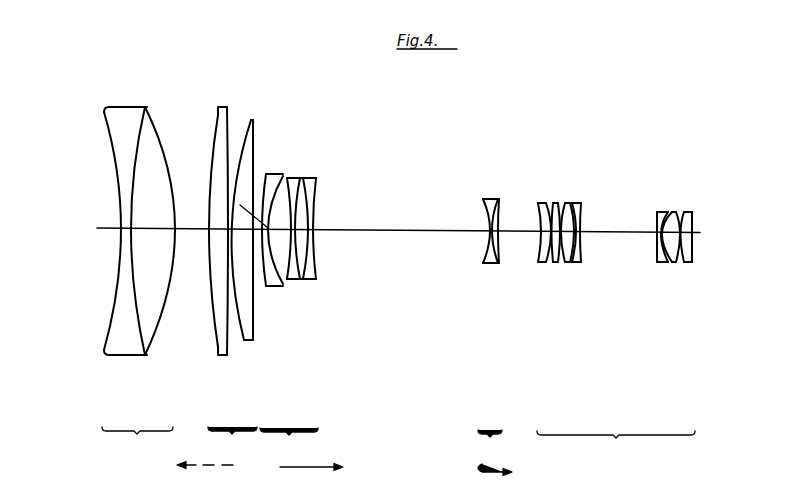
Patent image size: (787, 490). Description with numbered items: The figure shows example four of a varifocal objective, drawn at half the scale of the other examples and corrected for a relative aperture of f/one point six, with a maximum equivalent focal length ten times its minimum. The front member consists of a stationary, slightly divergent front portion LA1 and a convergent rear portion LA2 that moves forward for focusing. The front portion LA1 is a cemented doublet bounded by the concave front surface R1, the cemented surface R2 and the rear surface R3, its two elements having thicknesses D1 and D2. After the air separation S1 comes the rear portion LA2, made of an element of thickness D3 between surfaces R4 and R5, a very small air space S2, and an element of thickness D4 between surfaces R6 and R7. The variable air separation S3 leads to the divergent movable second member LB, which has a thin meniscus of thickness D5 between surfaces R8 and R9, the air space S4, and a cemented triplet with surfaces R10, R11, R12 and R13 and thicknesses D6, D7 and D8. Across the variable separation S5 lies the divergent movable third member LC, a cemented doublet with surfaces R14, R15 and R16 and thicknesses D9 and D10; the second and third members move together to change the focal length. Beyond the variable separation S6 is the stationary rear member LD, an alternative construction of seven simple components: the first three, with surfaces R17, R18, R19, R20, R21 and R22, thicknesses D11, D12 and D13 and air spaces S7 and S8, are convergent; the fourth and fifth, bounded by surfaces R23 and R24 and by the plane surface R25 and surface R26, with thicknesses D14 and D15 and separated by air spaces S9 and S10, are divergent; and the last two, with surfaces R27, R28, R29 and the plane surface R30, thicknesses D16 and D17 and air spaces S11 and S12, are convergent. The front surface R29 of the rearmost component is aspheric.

The front surface of first element R1 is at (122, 210).
The cemented surface of front doublet R2 is at (136, 170).
The rear surface of front doublet R3 is at (157, 133).
The front surface of fourth element R4 is at (213, 117).
The rear surface of fourth element R5 is at (214, 114).
The front surface of fifth element R6 is at (246, 118).
The rear surface of fifth element R7 is at (255, 200).
The front surface of meniscus element R8 is at (263, 226).
The rear surface of meniscus element R9 is at (270, 226).
The front surface of cemented triplet R10 is at (289, 179).
The first cemented surface of triplet R11 is at (301, 179).
The second cemented surface of triplet R12 is at (308, 192).
The rear surface of cemented triplet R13 is at (318, 207).
The front surface of third member R14 is at (484, 203).
The cemented surface of third member doublet R15 is at (492, 200).
The rear surface of third member R16 is at (496, 200).
The front surface of first rear component R17 is at (539, 202).
The rear surface of first rear component R18 is at (546, 202).
The front surface of second rear component R19 is at (552, 202).
The rear surface of second rear component R20 is at (558, 202).
The front surface of third rear component R21 is at (564, 202).
The rear surface of third rear component R22 is at (570, 202).
The front surface of fourth rear component R23 is at (574, 202).
The rear surface of fourth rear component R24 is at (580, 202).
The front surface of fifth rear component R25 is at (661, 212).
The rear surface of fifth rear component R26 is at (669, 210).
The front surface of sixth rear component R27 is at (674, 210).
The rear surface of sixth rear component R28 is at (688, 212).
The aspheric front surface of rearmost component R29 is at (686, 215).
The rear surface of rearmost component R30 is at (690, 238).
The axial thickness of first element D1 is at (124, 229).
The axial thickness of second element D2 is at (152, 232).
The axial thickness of third element D3 is at (221, 240).
The axial thickness of fourth element D4 is at (250, 343).
The axial thickness of fifth element D5 is at (272, 252).
The axial thickness of sixth element D6 is at (300, 262).
The axial thickness of seventh element D7 is at (305, 245).
The axial thickness of eighth element D8 is at (318, 236).
The axial thickness of ninth element D9 is at (485, 233).
The axial thickness of tenth element D10 is at (494, 252).
The axial thickness of eleventh element D11 is at (543, 240).
The axial thickness of twelfth element D12 is at (554, 255).
The axial thickness of thirteenth element D13 is at (566, 248).
The axial thickness of fourteenth element D14 is at (580, 237).
The axial thickness of fifteenth element D15 is at (660, 258).
The axial thickness of sixteenth element D16 is at (682, 265).
The axial thickness of seventeenth element D17 is at (696, 250).
The first air separation S1 is at (192, 236).
The second air separation S2 is at (228, 250).
The third air separation S3 is at (258, 262).
The fourth air separation S4 is at (218, 360).
The fifth air separation S5 is at (418, 233).
The sixth air separation S6 is at (520, 232).
The seventh air separation S7 is at (549, 265).
The eighth air separation S8 is at (562, 252).
The ninth air separation S9 is at (578, 245).
The tenth air separation S10 is at (627, 231).
The eleventh air separation S11 is at (671, 265).
The twelfth air separation S12 is at (690, 262).
The front portion of front member LA1 is at (137, 445).
The rear portion of front member LA2 is at (217, 448).
The movable second member LB is at (301, 449).
The movable third member LC is at (495, 453).
The stationary rear member LD is at (616, 449).